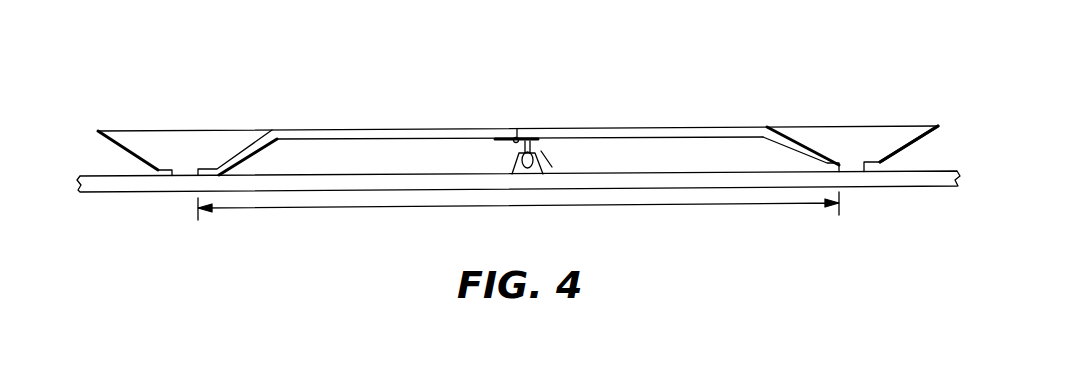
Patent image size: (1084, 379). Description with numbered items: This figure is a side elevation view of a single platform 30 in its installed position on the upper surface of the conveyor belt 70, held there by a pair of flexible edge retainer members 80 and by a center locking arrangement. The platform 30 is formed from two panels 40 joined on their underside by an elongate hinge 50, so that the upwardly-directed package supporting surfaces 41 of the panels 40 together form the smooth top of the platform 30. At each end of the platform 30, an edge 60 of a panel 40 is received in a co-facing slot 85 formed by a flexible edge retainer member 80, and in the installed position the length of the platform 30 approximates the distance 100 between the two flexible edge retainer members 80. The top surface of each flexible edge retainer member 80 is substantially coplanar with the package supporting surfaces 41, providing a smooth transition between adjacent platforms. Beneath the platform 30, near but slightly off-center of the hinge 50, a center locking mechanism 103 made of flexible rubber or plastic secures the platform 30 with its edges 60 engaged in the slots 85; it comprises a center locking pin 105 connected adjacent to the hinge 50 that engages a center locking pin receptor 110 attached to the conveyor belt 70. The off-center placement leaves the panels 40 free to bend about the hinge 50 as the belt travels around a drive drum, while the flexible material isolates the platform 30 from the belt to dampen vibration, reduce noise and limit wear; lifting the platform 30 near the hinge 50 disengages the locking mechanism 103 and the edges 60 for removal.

The platform 30 is at (750, 126).
The panel 40 is at (372, 128).
The package supporting surface 41 is at (428, 128).
The elongate hinge 50 is at (503, 137).
The edge 60 is at (848, 168).
The conveyor belt 70 is at (942, 168).
The flexible edge retainer member 80 is at (853, 126).
The co-facing slot 85 is at (230, 138).
The distance between flexible edge retainer members 100 is at (345, 208).
The center locking mechanism 103 is at (562, 137).
The center locking pin 105 is at (518, 150).
The center locking pin receptor 110 is at (545, 162).